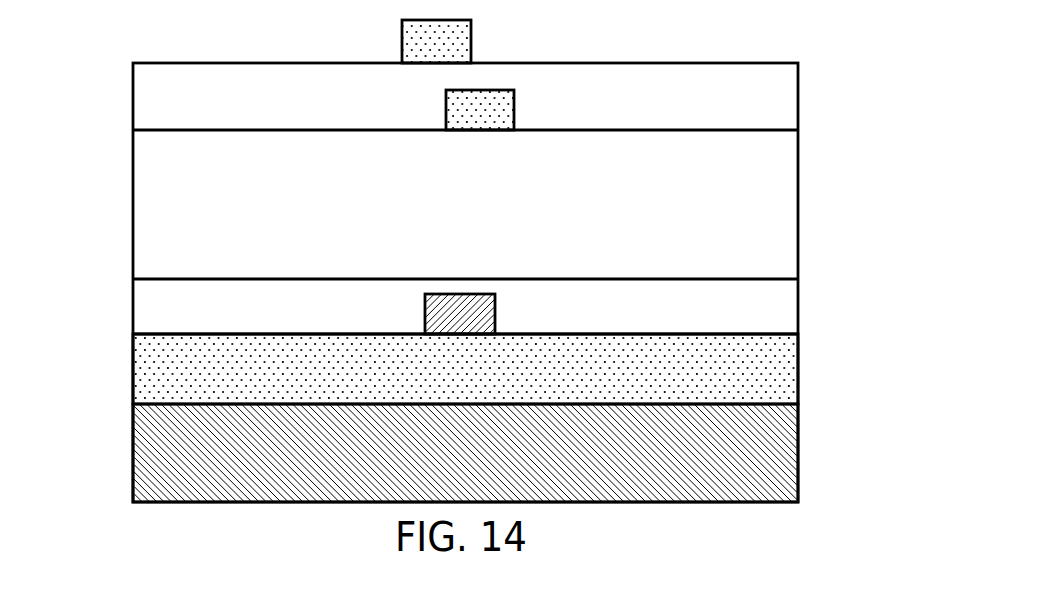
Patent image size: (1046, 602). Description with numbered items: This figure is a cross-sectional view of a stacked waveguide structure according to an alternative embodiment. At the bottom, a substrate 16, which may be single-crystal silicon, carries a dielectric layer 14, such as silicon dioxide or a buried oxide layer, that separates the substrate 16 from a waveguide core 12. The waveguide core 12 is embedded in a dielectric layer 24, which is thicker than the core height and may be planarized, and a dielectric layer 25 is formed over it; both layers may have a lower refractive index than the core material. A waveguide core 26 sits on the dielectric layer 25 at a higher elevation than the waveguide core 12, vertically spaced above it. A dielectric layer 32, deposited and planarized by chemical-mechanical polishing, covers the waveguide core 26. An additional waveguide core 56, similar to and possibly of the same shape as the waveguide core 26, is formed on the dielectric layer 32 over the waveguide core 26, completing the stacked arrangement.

The waveguide core 12 is at (465, 318).
The dielectric layer 14 is at (750, 380).
The substrate 16 is at (758, 452).
The dielectric layer 24 is at (178, 310).
The dielectric layer 25 is at (183, 221).
The waveguide core 26 is at (492, 112).
The dielectric layer 32 is at (757, 102).
The waveguide core 56 is at (447, 43).